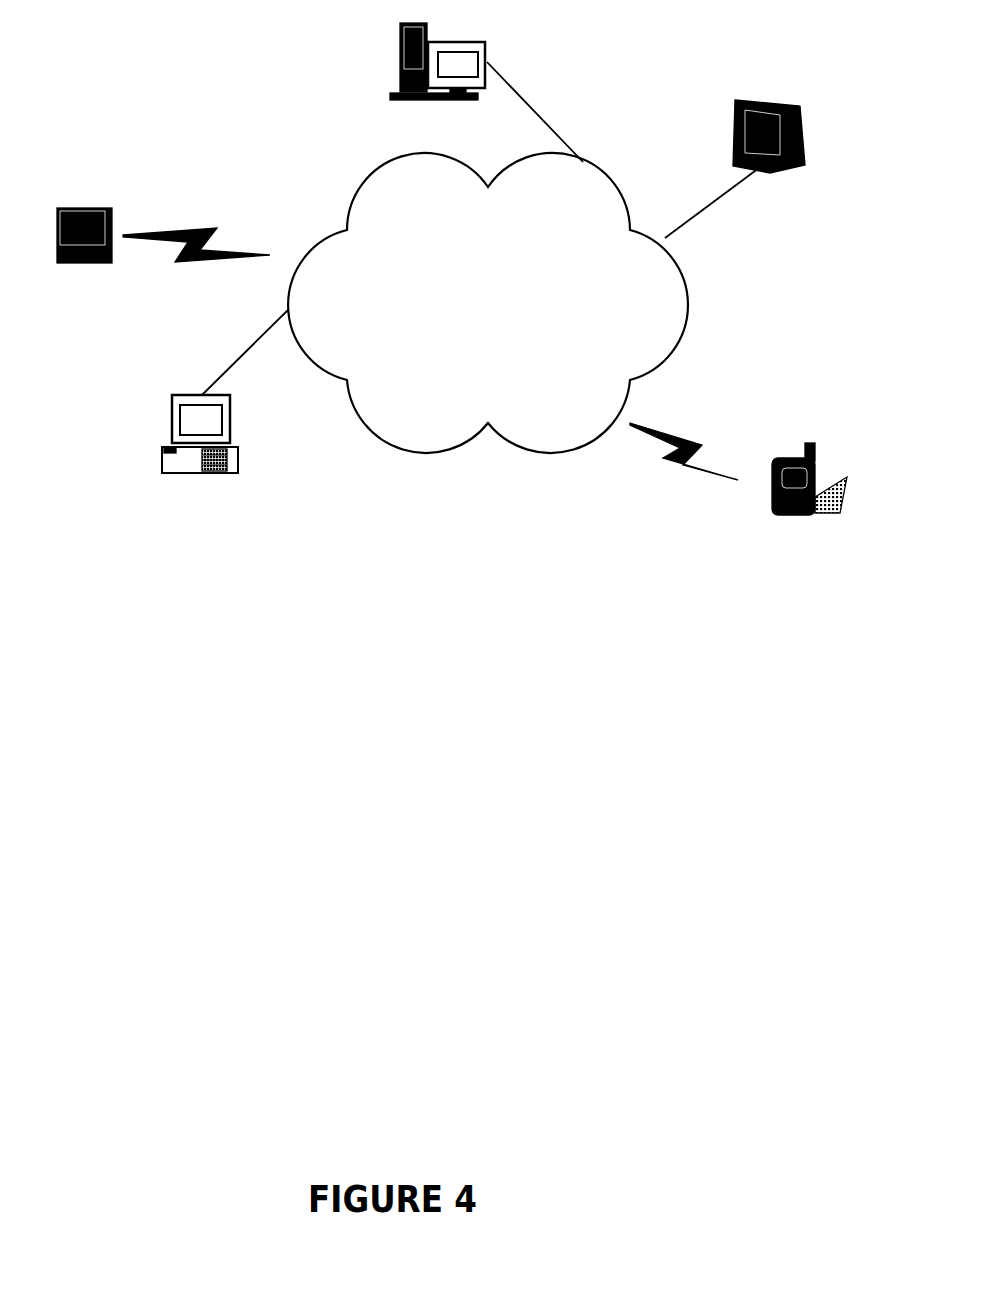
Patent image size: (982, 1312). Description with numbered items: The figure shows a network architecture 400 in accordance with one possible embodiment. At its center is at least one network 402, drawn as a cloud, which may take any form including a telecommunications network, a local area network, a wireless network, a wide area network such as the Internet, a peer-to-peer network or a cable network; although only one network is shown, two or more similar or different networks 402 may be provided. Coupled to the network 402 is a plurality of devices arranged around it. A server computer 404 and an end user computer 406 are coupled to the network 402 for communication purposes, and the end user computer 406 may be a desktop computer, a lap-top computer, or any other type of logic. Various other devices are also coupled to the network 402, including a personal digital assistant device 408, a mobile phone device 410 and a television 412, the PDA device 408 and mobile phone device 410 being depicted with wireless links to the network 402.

The network architecture 400 is at (400, 737).
The network 402 is at (548, 455).
The server computer 404 is at (400, 60).
The end user computer 406 is at (162, 452).
The personal digital assistant (PDA) device 408 is at (87, 208).
The mobile phone device 410 is at (772, 460).
The television 412 is at (748, 92).